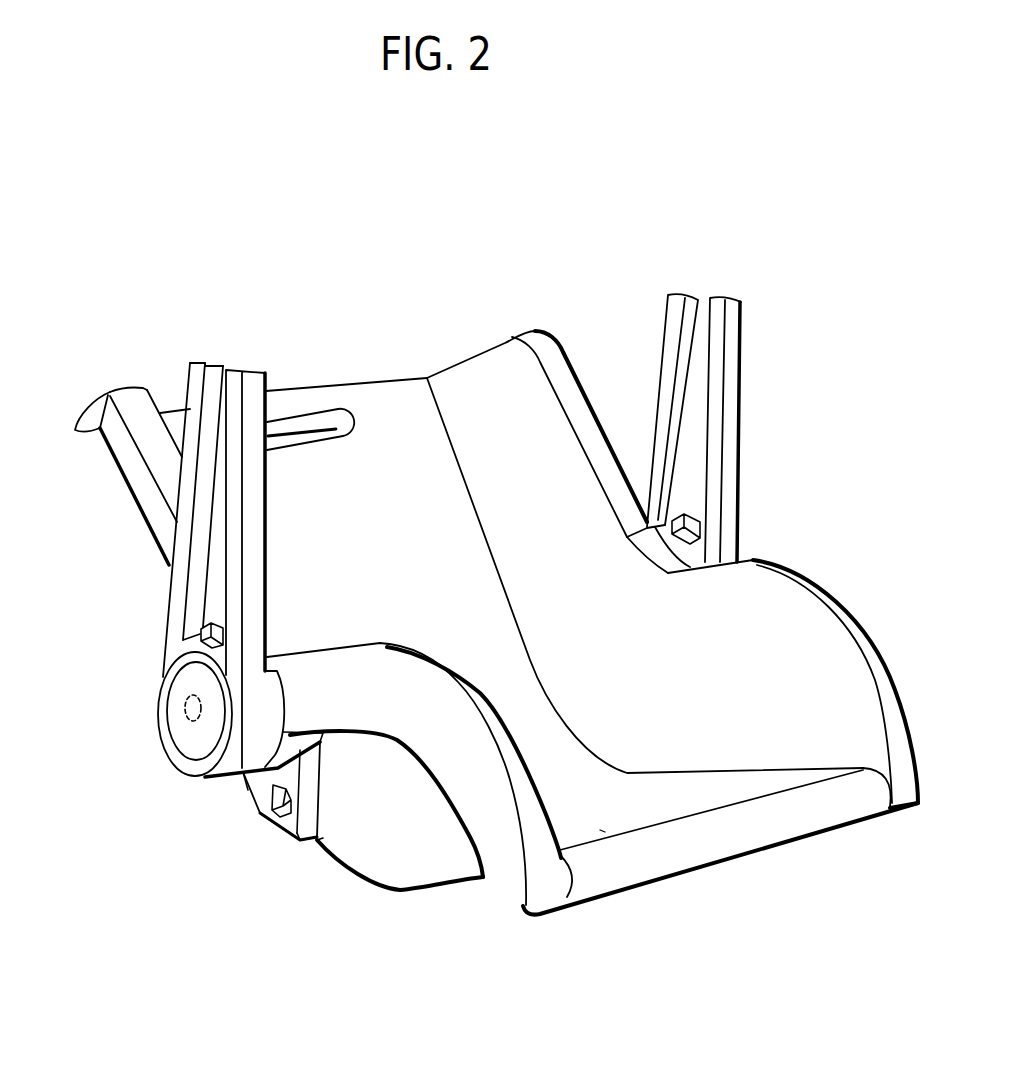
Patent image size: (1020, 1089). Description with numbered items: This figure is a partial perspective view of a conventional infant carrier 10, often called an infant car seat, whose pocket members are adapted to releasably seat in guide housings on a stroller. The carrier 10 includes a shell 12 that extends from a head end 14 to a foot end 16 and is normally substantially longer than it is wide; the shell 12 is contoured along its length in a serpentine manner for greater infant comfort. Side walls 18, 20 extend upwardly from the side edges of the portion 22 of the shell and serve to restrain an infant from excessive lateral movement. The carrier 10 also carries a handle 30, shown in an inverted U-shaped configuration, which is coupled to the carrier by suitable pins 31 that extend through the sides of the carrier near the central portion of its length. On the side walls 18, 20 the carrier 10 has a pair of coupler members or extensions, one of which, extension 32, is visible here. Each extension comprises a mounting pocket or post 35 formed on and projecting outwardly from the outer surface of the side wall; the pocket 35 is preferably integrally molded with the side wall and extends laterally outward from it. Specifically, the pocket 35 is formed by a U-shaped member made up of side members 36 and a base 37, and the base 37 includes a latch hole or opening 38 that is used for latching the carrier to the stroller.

The carrier 10 is at (122, 481).
The shell 12 is at (653, 810).
The head end 14 is at (383, 377).
The foot end 16 is at (747, 787).
The side wall 18 is at (485, 813).
The side wall 20 is at (813, 672).
The portion 22 is at (593, 820).
The handle 30 is at (177, 567).
The pin 31 is at (186, 712).
The coupler member or extension 32 is at (263, 817).
The mounting pocket or post 35 is at (303, 830).
The side member 36 is at (305, 835).
The base 37 is at (253, 810).
The latch hole or opening 38 is at (273, 818).